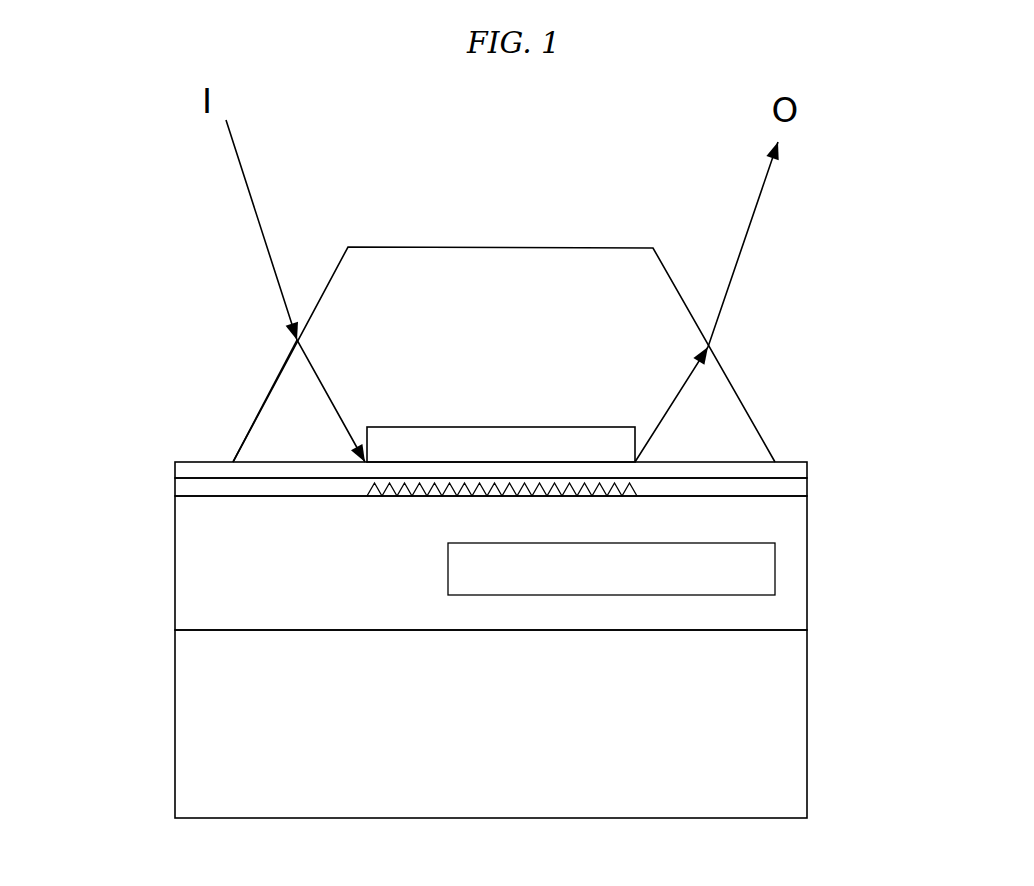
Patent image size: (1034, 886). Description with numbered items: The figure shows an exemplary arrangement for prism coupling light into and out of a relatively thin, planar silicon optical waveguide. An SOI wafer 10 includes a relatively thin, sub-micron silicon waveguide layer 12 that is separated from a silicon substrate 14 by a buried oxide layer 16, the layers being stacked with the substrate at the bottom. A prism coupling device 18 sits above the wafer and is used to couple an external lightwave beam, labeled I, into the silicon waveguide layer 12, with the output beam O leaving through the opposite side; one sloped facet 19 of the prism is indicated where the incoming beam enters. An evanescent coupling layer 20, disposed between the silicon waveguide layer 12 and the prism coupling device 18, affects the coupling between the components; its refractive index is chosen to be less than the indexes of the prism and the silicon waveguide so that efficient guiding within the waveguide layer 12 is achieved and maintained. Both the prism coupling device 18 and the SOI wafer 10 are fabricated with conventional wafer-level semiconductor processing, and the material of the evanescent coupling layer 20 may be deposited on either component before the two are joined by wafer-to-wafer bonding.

The SOI wafer 10 is at (537, 494).
The silicon waveguide layer 12 is at (795, 488).
The silicon substrate 14 is at (197, 730).
The buried oxide layer 16 is at (190, 550).
The prism coupling device 18 is at (472, 255).
The input facet of prism 19 is at (270, 380).
The evanescent coupling layer 20 is at (182, 470).